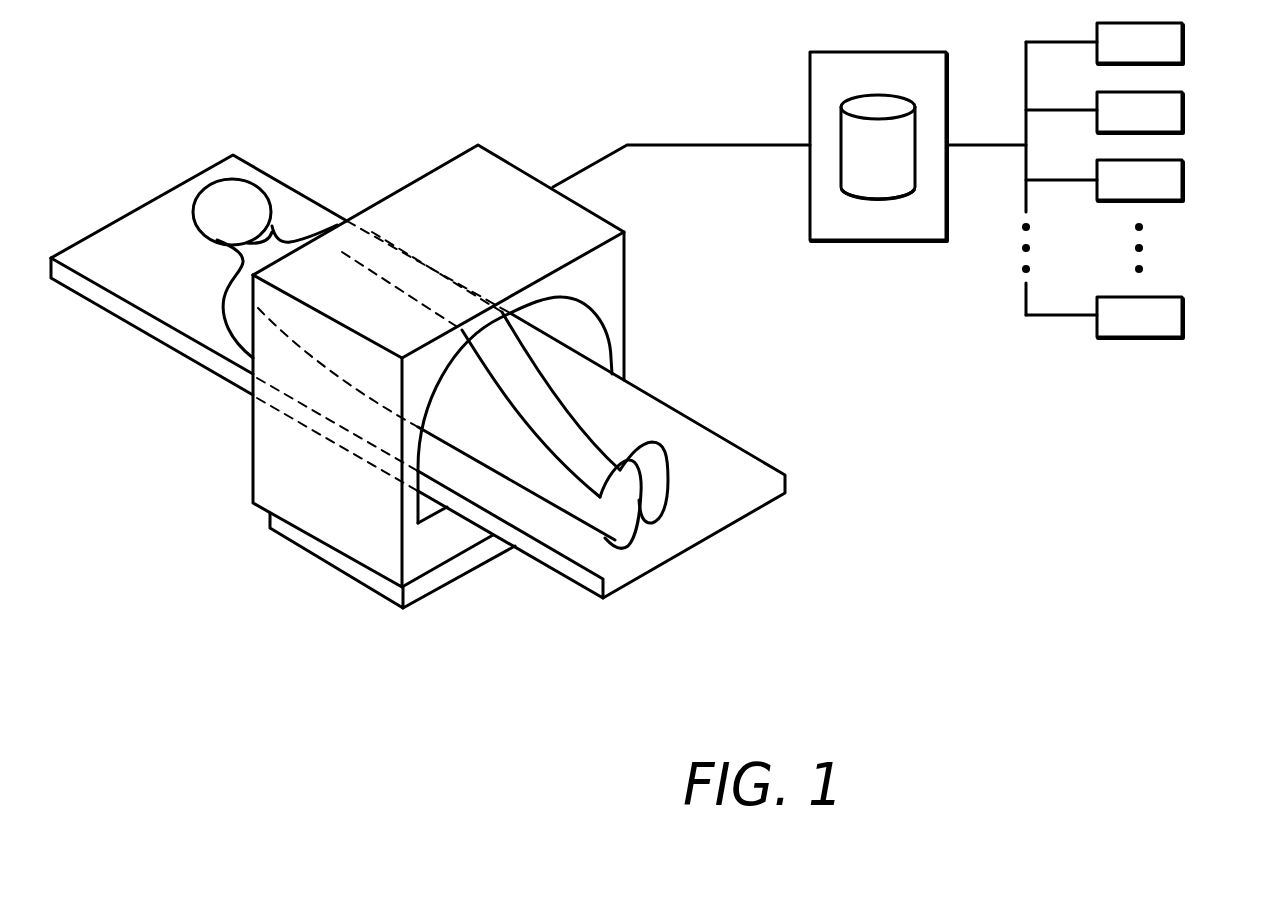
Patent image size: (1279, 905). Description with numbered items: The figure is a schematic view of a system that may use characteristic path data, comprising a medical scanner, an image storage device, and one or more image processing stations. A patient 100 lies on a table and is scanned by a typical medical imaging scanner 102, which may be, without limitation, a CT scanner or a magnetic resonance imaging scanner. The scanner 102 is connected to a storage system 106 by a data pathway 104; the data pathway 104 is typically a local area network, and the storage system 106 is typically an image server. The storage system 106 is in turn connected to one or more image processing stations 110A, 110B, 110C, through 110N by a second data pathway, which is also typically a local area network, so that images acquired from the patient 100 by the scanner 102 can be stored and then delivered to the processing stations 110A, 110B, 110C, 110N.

The patient 100 is at (235, 298).
The medical imaging scanner 102 is at (627, 305).
The data pathway 104 is at (718, 142).
The storage system 106 is at (928, 52).
The image processing station 110A is at (1182, 43).
The image processing station 110B is at (1182, 110).
The image processing station 110C is at (1182, 178).
The image processing station 110N is at (1182, 317).